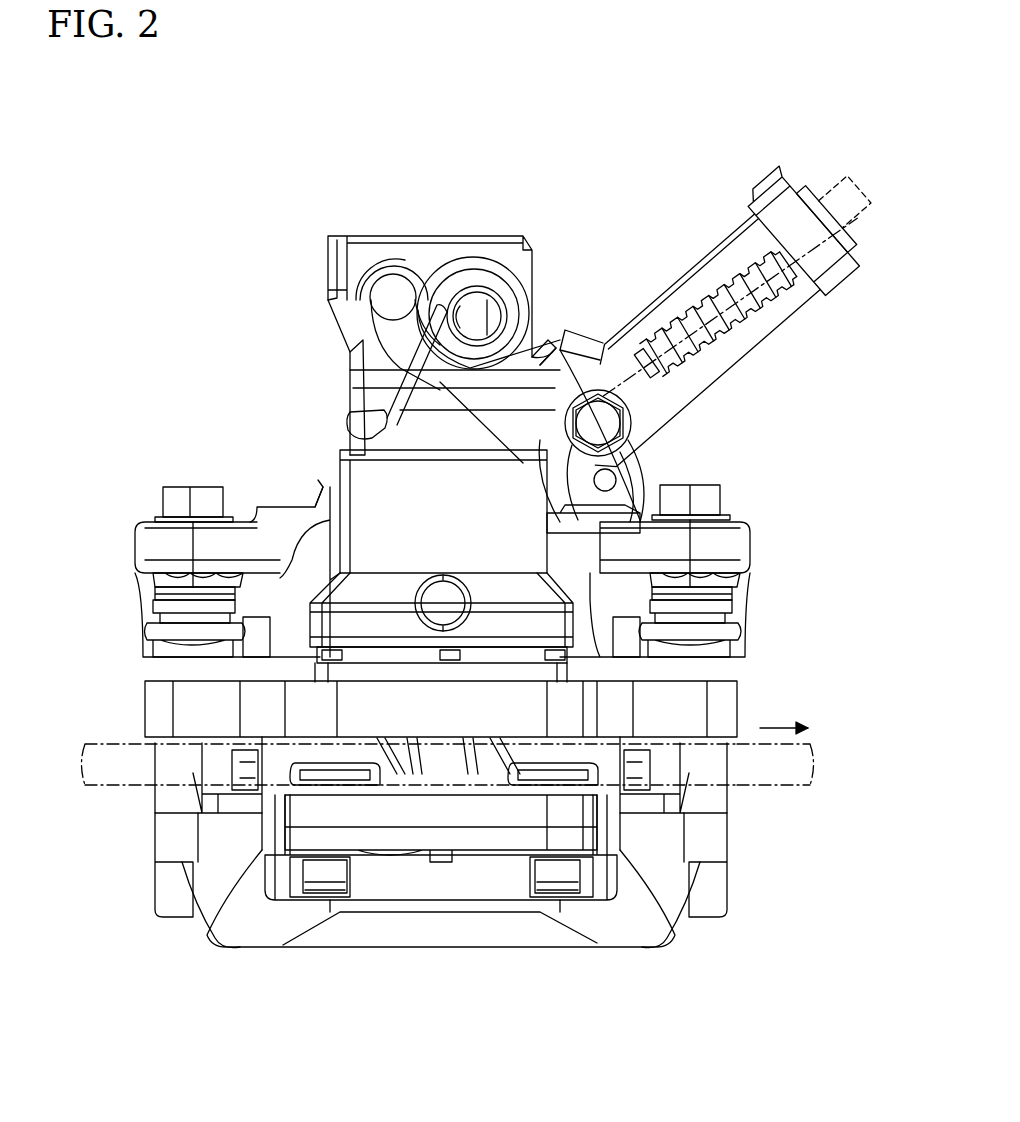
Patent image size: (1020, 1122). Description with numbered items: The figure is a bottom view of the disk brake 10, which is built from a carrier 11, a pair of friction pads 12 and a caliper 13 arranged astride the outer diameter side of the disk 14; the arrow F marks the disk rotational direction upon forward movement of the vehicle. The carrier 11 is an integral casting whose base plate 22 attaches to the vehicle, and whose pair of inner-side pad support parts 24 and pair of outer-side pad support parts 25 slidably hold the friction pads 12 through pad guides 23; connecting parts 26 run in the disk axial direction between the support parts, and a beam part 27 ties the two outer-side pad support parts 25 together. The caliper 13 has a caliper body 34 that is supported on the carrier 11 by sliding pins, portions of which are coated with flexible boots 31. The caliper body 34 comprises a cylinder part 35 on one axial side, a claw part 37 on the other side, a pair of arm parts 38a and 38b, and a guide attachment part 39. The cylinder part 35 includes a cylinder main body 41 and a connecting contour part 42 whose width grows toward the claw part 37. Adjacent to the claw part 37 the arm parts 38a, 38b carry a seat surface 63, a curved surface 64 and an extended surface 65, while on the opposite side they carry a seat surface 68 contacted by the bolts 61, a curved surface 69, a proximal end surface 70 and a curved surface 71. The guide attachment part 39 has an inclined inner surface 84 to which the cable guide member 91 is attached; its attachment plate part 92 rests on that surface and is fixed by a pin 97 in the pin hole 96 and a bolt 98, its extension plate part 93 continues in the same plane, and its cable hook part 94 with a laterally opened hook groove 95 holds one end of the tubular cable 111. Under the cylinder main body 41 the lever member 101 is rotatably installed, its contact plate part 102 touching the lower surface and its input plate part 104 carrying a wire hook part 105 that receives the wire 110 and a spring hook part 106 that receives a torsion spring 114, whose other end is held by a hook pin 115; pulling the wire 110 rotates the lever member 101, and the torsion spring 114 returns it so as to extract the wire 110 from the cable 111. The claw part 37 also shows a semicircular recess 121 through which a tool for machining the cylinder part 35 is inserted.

The disk brake 10 is at (138, 242).
The carrier 11 is at (230, 950).
The friction pads 12 is at (463, 807).
The caliper 13 is at (328, 230).
The disk 14 is at (95, 740).
The base plate 22 is at (365, 705).
The pad guides 23 is at (215, 898).
The inner-side pad support parts 24 is at (160, 692).
The outer-side pad support parts 25 is at (222, 840).
The connecting parts 26 is at (165, 797).
The beam part 27 is at (398, 935).
The boots 31 is at (165, 630).
The caliper body 34 is at (277, 510).
The cylinder part 35 is at (350, 365).
The claw part 37 is at (330, 880).
The arm part 38a is at (150, 543).
The arm part 38b is at (732, 540).
The guide attachment part 39 is at (648, 462).
The cylinder main body 41 is at (332, 266).
The connecting contour part 42 is at (310, 502).
The bolts 61 is at (182, 496).
The seat surface 63 is at (170, 577).
The curved surface 64 is at (195, 590).
The extended surface 65 is at (183, 600).
The seat surface 68 is at (168, 517).
The curved surface 69 is at (212, 487).
The proximal end surface 70 is at (243, 502).
The curved surface 71 is at (309, 500).
The inner surface 84 is at (642, 520).
The cable guide member 91 is at (745, 212).
The attachment plate part 92 is at (565, 377).
The extension plate part 93 is at (706, 282).
The cable hook part 94 is at (800, 206).
The hook groove 95 is at (828, 290).
The pin hole 96 is at (612, 428).
The pin 97 is at (614, 482).
The bolt 98 is at (730, 377).
The lever member 101 is at (345, 411).
The contact plate part 102 is at (434, 278).
The input plate part 104 is at (482, 318).
The wire hook part 105 is at (527, 345).
The spring hook part 106 is at (357, 420).
The wire 110 is at (623, 375).
The cable 111 is at (843, 214).
The torsion spring 114 is at (458, 402).
The hook pin 115 is at (394, 292).
The recess 121 is at (512, 877).
The arrow F is at (778, 722).